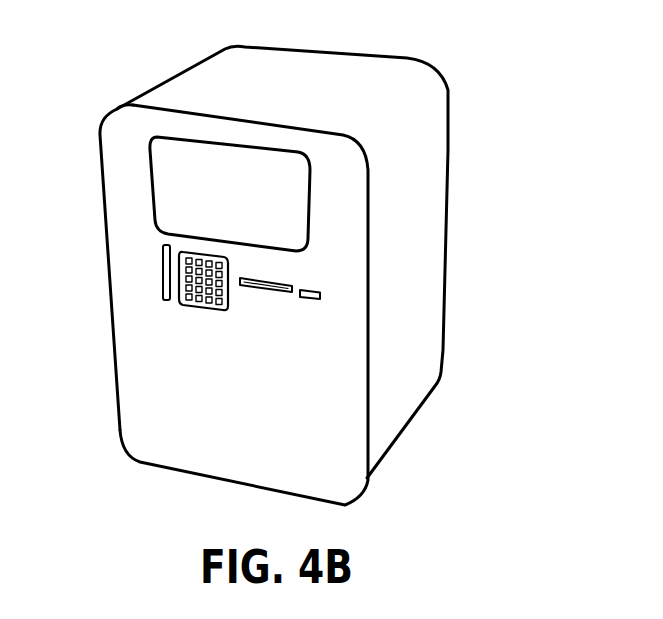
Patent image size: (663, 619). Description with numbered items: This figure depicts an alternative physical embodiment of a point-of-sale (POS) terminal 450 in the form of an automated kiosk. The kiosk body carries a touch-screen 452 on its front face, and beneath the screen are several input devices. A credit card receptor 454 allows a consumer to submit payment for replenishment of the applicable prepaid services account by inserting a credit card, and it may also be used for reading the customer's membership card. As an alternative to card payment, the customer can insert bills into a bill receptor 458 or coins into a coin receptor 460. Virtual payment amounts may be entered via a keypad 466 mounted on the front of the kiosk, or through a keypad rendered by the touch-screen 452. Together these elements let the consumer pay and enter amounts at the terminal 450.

The POS terminal 450 is at (471, 93).
The touch-screen 452 is at (312, 180).
The credit card receptor 454 is at (162, 273).
The bill receptor 458 is at (273, 292).
The coin receptor 460 is at (310, 300).
The keypad 466 is at (203, 310).